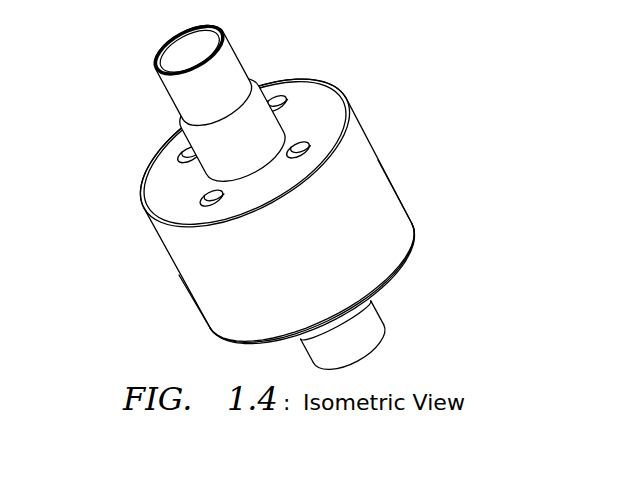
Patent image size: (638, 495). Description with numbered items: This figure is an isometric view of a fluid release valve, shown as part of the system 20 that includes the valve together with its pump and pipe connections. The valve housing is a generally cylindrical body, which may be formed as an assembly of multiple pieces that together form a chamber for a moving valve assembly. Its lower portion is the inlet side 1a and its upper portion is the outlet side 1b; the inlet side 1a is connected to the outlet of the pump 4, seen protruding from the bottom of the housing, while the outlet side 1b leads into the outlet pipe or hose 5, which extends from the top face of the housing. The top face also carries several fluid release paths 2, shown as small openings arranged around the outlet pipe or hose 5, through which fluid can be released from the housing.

The inlet side 1a is at (414, 230).
The outlet side 1b is at (370, 150).
The fluid release path 2 is at (301, 141).
The pump 4 is at (384, 318).
The outlet pipe or hose 5 is at (230, 48).
The system 20 is at (450, 85).